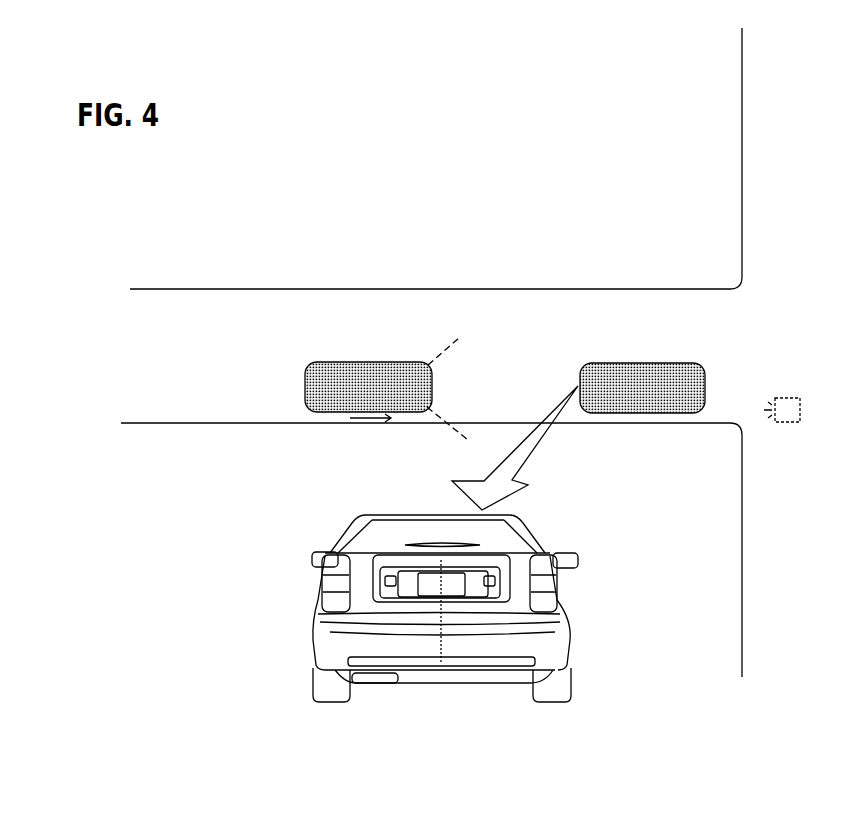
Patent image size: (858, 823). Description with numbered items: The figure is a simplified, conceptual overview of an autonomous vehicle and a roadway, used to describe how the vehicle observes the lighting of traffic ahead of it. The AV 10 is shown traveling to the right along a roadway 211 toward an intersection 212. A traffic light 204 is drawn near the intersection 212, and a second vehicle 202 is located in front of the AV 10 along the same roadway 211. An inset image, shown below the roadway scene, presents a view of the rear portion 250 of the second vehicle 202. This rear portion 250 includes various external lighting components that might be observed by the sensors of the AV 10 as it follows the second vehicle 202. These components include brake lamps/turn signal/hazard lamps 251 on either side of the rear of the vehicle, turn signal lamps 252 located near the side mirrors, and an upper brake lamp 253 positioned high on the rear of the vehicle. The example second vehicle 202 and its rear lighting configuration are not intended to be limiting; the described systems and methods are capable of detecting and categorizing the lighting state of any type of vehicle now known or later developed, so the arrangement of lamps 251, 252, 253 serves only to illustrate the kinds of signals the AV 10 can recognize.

The AV 10 is at (306, 375).
The second vehicle 202 is at (675, 372).
The traffic light 204 is at (795, 420).
The roadway 211 is at (197, 336).
The intersection 212 is at (852, 369).
The rear portion 250 is at (448, 590).
The brake lamps/turn signal/hazard lamps 251 is at (563, 600).
The turn signal lamps 252 is at (572, 560).
The upper brake lamp 253 is at (470, 546).